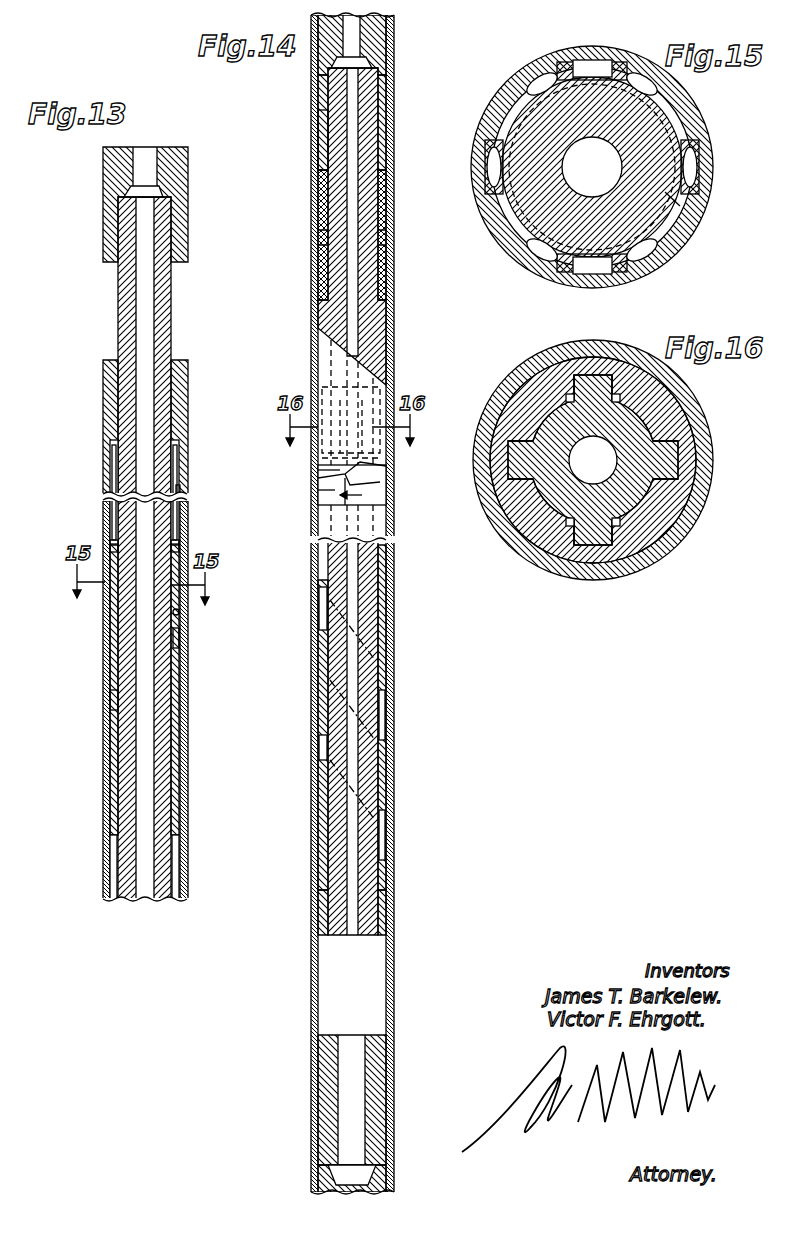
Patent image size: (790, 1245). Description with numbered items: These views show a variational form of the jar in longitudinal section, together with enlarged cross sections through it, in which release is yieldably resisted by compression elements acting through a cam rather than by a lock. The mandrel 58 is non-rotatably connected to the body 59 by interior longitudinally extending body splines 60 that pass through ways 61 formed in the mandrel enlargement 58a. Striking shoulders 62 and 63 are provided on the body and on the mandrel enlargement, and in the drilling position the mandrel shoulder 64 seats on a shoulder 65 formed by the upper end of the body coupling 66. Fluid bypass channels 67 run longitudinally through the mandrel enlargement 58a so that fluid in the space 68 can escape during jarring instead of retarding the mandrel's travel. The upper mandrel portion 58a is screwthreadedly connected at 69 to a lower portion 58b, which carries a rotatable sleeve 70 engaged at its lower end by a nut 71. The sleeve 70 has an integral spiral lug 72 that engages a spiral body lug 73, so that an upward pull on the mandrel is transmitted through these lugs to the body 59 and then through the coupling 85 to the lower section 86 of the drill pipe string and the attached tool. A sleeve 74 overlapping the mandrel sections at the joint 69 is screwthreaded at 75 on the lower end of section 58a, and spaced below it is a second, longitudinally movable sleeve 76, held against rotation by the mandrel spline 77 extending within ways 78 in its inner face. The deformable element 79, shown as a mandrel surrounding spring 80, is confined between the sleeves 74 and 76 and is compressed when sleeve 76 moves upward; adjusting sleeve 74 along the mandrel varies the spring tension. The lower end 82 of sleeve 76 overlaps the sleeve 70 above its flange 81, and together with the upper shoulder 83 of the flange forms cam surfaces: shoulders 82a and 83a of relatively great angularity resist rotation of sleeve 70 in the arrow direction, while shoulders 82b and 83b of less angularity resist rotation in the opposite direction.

In FIG. 13, the mandrel 58 is at (165, 520).
In FIG. 15, the mandrel 58 is at (650, 160).
In FIG. 13, the mandrel enlargement 58a is at (178, 552).
In FIG. 15, the mandrel enlargement 58a is at (680, 200).
In FIG. 14, the lower mandrel portion 58b is at (388, 347).
In FIG. 16, the lower mandrel portion 58b is at (642, 497).
In FIG. 13, the body 59 is at (186, 684).
In FIG. 14, the body 59 is at (392, 854).
In FIG. 15, the body 59 is at (662, 258).
In FIG. 16, the body 59 is at (688, 538).
In FIG. 13, the body splines 60 is at (180, 490).
In FIG. 15, the body splines 60 is at (682, 222).
In FIG. 13, the ways 61 is at (185, 612).
In FIG. 15, the ways 61 is at (500, 215).
In FIG. 13, the striking shoulder 62 is at (113, 455).
In FIG. 13, the striking shoulder 63 is at (118, 540).
In FIG. 13, the mandrel shoulder 64 is at (180, 640).
In FIG. 13, the shoulder 65 is at (116, 702).
In FIG. 13, the body coupling 66 is at (175, 766).
In FIG. 13, the fluid bypass channels 67 is at (108, 600).
In FIG. 15, the fluid bypass channels 67 is at (694, 168).
In FIG. 13, the space 68 is at (176, 470).
In FIG. 14, the screwthreaded connection 69 is at (388, 78).
In FIG. 14, the rotatable sleeve 70 is at (376, 666).
In FIG. 14, the nut 71 is at (376, 906).
In FIG. 14, the spiral lug 72 is at (326, 706).
In FIG. 14, the spiral body lug 73 is at (318, 690).
In FIG. 14, the sleeve 74 is at (395, 147).
In FIG. 14, the screwthread 75 is at (392, 92).
In FIG. 14, the longitudinally movable sleeve 76 is at (392, 362).
In FIG. 16, the longitudinally movable sleeve 76 is at (655, 535).
In FIG. 14, the mandrel spline 77 is at (378, 392).
In FIG. 16, the mandrel spline 77 is at (672, 468).
In FIG. 16, the ways 78 is at (690, 448).
In FIG. 14, the deformable element 79 is at (382, 238).
In FIG. 14, the spring 80 is at (318, 248).
In FIG. 14, the flange 81 is at (382, 506).
In FIG. 14, the lower end of sleeve 82 is at (382, 468).
In FIG. 14, the cam shoulder 82a is at (382, 482).
In FIG. 14, the cam shoulder 82b is at (322, 522).
In FIG. 14, the upper shoulder 83 is at (322, 500).
In FIG. 14, the cam shoulder 83a is at (326, 472).
In FIG. 14, the cam shoulder 83b is at (322, 490).
In FIG. 14, the coupling 85 is at (388, 1082).
In FIG. 14, the lower section of drill pipe string 86 is at (392, 1180).